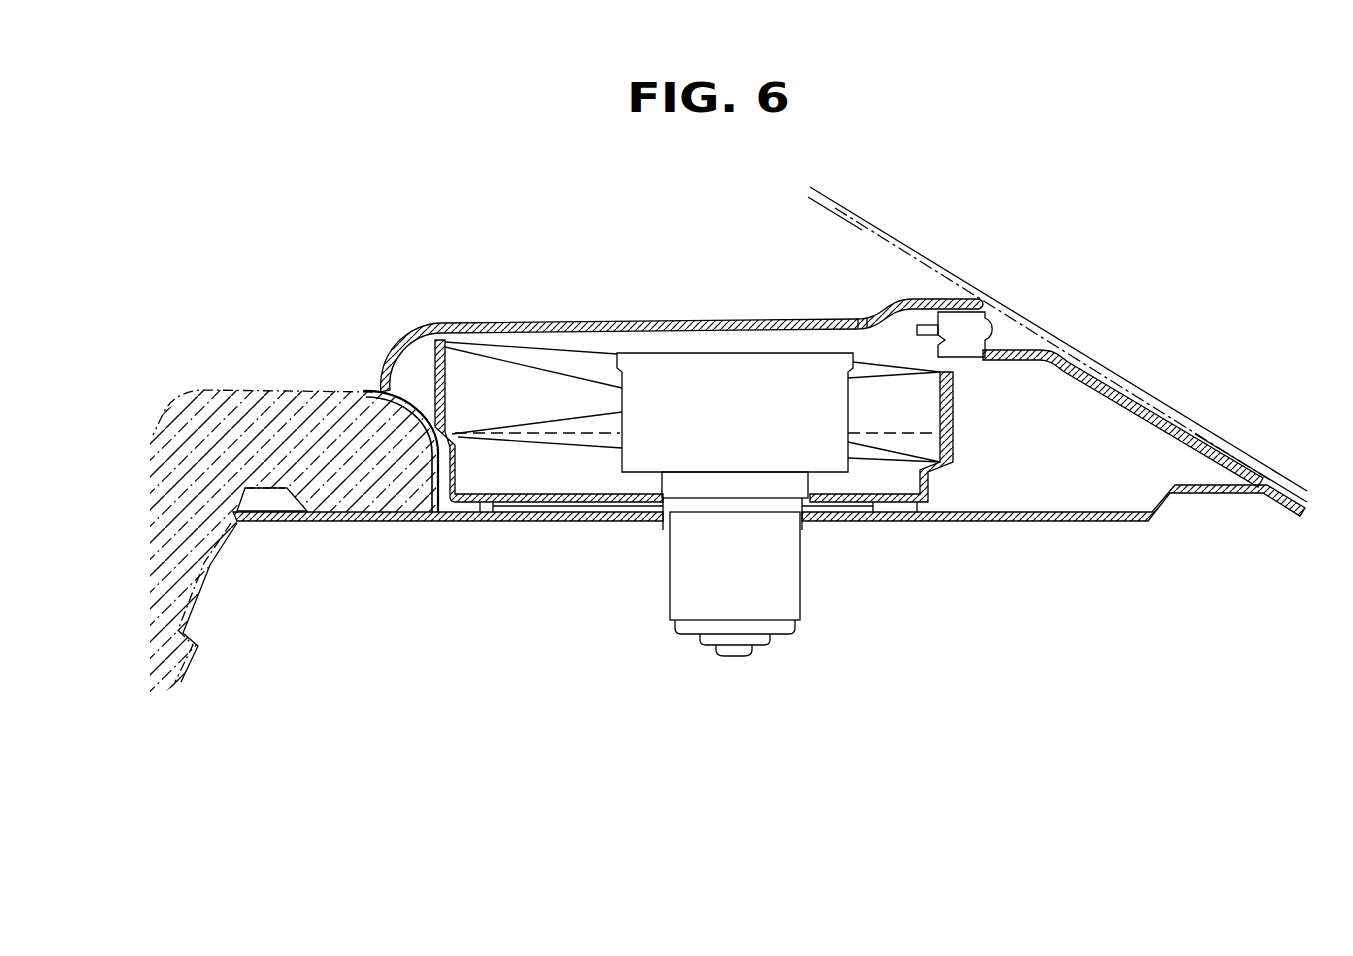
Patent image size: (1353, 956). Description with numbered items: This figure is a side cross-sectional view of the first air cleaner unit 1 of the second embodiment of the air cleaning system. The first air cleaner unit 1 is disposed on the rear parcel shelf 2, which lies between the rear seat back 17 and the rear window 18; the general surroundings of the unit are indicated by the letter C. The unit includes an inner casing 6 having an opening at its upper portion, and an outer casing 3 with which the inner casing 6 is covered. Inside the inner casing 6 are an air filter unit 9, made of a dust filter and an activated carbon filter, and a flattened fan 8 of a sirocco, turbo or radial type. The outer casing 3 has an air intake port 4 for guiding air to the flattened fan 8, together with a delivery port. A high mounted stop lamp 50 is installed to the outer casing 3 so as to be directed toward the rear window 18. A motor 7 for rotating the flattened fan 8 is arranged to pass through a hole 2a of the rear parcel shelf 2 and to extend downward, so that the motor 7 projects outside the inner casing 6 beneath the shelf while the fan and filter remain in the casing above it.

The first air cleaner unit 1 is at (625, 550).
The rear parcel shelf 2 is at (1095, 521).
The hole of the rear parcel shelf 2a is at (808, 522).
The outer casing 3 is at (865, 320).
The air intake port 4 is at (625, 316).
The inner casing 6 is at (557, 502).
The motor 7 is at (796, 604).
The flattened fan 8 is at (748, 365).
The air filter unit 9 is at (538, 352).
The rear seat back 17 is at (297, 390).
The rear window 18 is at (917, 252).
The high mounted stop lamp 50 is at (1002, 337).
The passenger compartment C is at (362, 246).